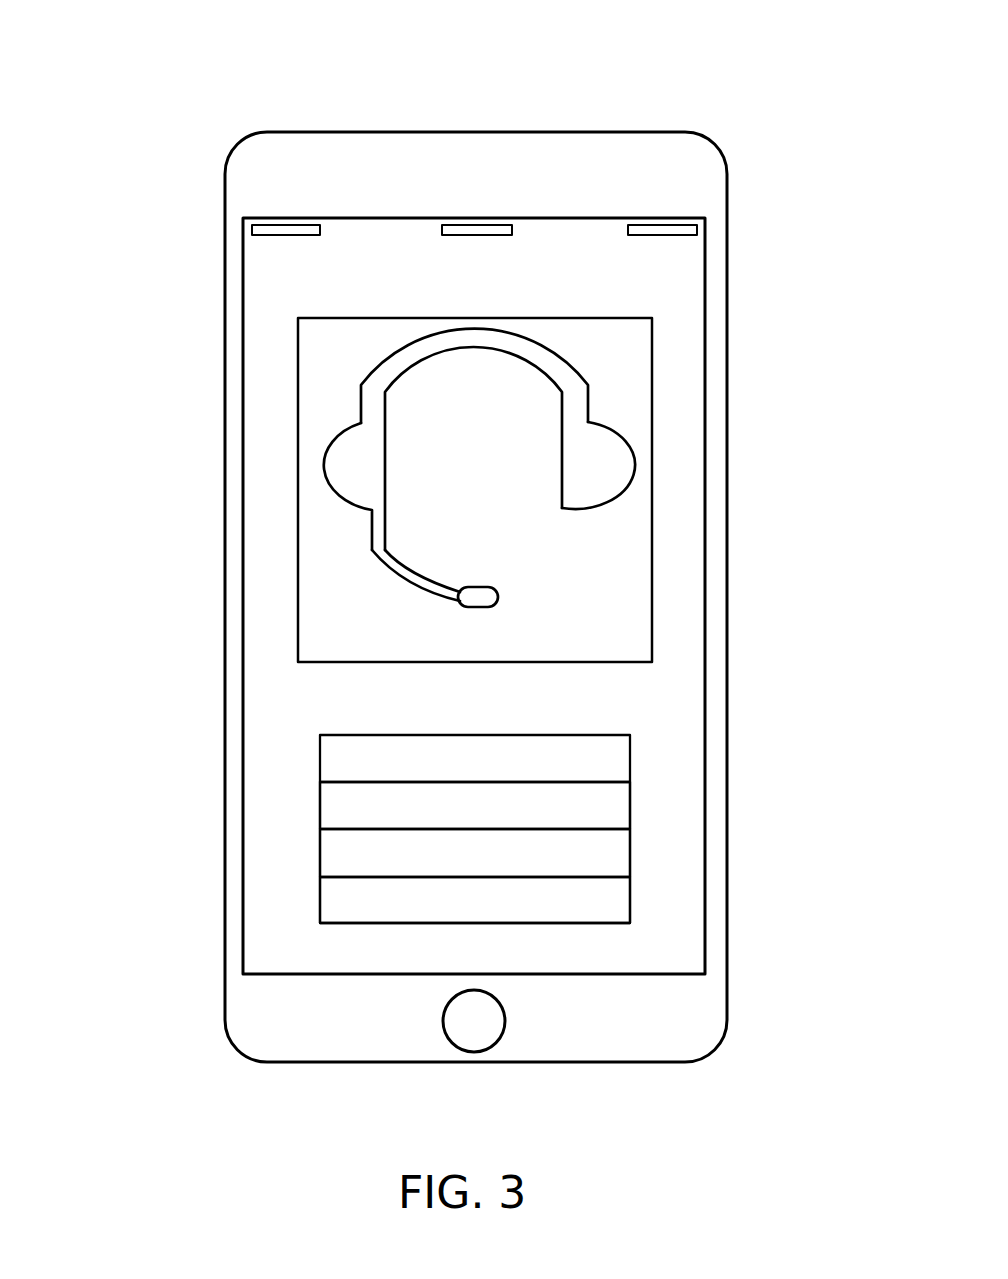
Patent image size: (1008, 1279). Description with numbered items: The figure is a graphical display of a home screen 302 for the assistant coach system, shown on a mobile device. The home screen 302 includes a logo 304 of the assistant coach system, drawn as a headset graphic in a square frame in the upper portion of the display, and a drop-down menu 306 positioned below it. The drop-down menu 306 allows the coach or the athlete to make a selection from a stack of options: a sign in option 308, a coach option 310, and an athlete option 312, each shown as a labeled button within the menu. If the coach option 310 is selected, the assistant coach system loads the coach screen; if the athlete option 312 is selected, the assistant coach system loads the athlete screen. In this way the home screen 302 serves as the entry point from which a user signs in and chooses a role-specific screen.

The home screen 302 is at (128, 44).
The logo 304 is at (637, 352).
The drop-down menu 306 is at (603, 803).
The sign in option 308 is at (612, 802).
The coach option 310 is at (612, 858).
The athlete option 312 is at (612, 910).